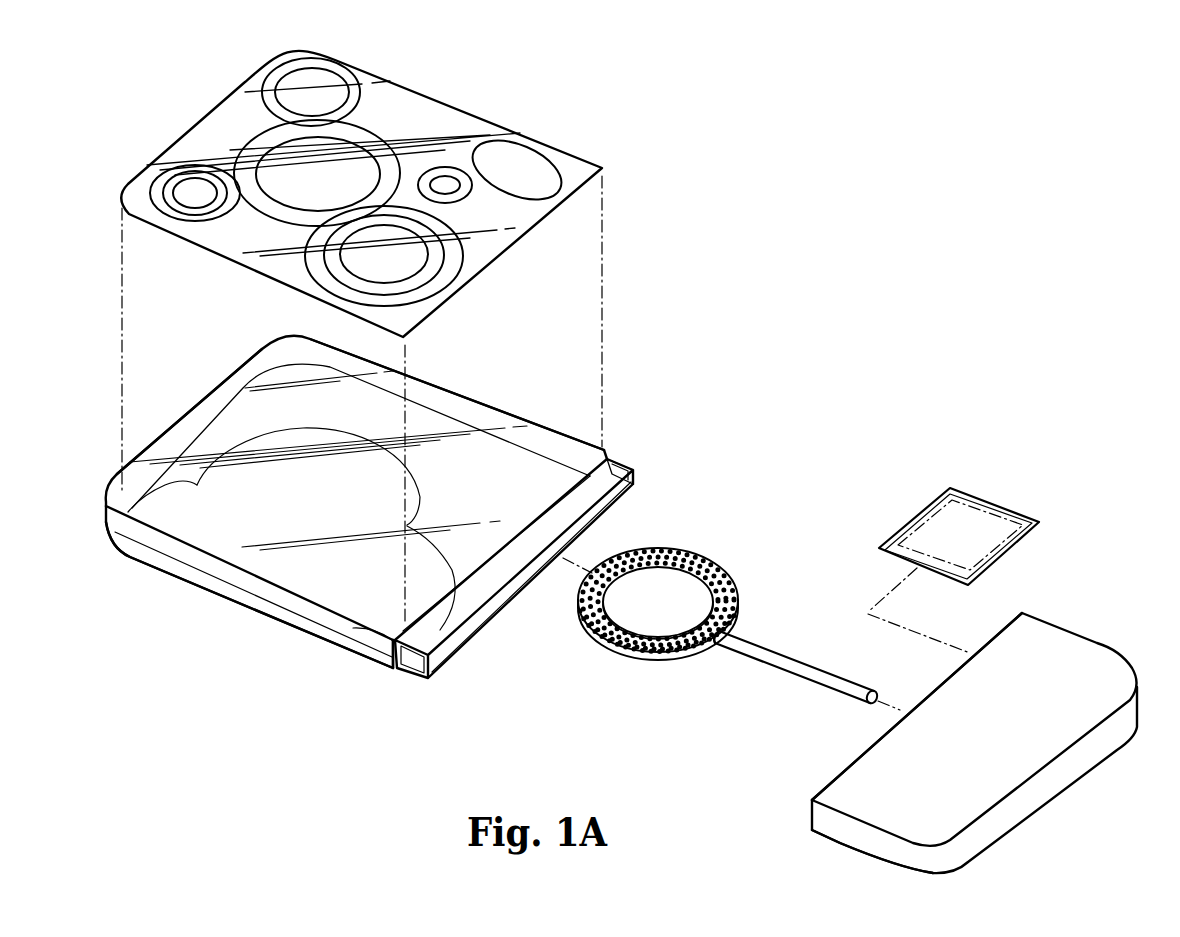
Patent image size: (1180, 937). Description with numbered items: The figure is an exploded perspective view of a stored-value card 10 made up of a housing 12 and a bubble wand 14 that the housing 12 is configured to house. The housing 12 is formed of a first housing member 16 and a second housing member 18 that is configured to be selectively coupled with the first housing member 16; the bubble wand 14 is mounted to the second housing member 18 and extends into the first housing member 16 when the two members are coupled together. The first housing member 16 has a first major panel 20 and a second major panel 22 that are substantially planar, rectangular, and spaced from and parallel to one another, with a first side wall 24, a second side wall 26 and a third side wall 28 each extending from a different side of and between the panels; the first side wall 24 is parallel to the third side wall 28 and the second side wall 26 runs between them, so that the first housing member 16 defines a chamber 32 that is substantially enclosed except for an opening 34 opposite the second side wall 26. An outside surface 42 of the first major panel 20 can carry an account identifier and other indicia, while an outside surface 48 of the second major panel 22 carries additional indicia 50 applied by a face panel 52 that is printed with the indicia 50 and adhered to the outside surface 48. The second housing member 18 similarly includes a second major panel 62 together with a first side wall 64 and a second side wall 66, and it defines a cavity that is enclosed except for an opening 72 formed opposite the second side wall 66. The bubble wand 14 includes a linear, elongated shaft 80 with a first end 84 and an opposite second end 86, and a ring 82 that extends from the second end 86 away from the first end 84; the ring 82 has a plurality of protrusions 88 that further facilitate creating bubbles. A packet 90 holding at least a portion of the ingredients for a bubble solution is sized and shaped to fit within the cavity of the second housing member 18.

The stored-value card 10 is at (815, 290).
The housing 12 is at (826, 768).
The bubble wand 14 is at (776, 641).
The first housing member 16 is at (564, 427).
The second housing member 18 is at (1074, 621).
The first major panel 20 is at (256, 603).
The second major panel 22 is at (212, 398).
The first side wall 24 is at (379, 660).
The second side wall 26 is at (158, 423).
The third side wall 28 is at (447, 383).
The chamber 32 is at (644, 492).
The opening 34 is at (484, 624).
The outside surface of first major panel 42 is at (160, 562).
The outside surface of second major panel 48 is at (493, 418).
The indicia 50 is at (240, 128).
The face panel 52 is at (571, 145).
The second major panel 62 is at (1083, 673).
The first side wall 64 is at (838, 833).
The second side wall 66 is at (1071, 772).
The opening 72 is at (1008, 617).
The shaft 80 is at (790, 664).
The ring 82 is at (700, 552).
The first end 84 is at (853, 693).
The second end 86 is at (730, 636).
The protrusions 88 is at (674, 546).
The packet 90 is at (978, 527).